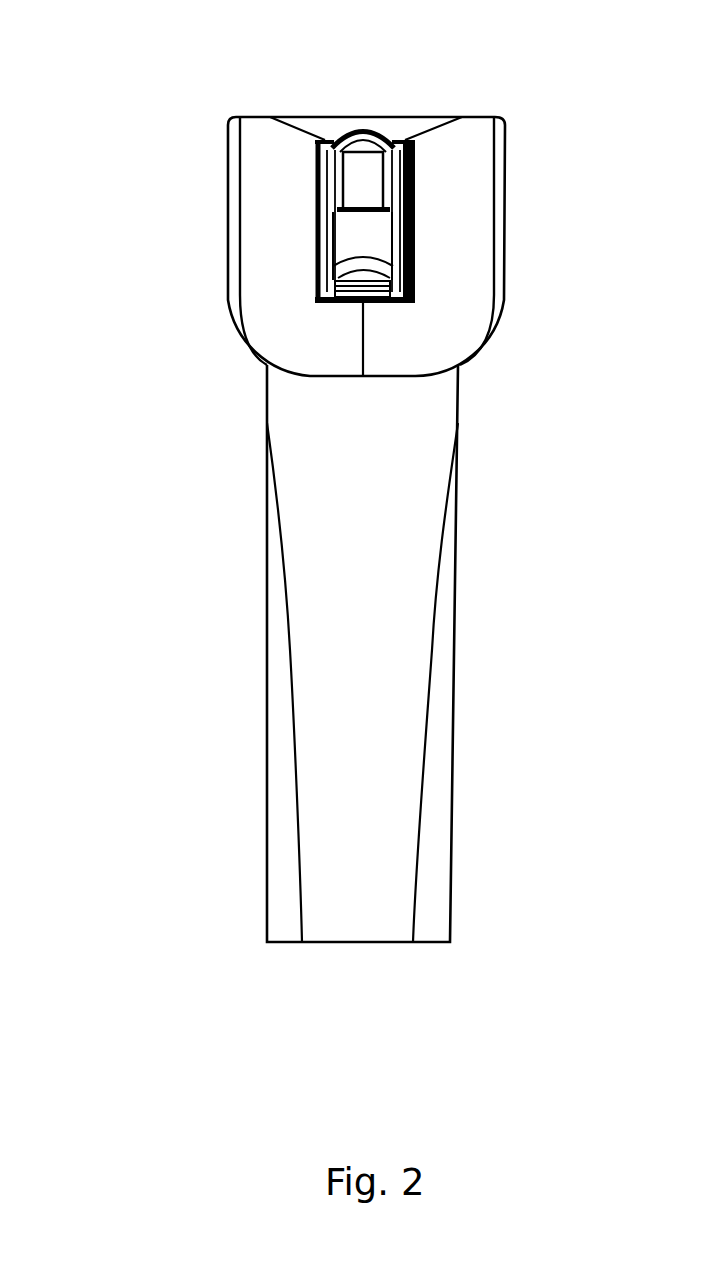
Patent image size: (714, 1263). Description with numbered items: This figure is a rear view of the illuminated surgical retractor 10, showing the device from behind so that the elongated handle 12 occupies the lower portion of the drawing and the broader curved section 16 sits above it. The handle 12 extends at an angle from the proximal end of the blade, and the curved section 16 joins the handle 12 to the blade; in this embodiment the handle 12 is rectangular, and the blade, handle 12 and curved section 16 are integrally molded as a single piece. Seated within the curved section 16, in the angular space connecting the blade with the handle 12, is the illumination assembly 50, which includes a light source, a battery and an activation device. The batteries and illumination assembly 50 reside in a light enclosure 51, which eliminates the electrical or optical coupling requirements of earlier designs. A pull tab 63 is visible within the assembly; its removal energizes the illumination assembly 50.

The illuminated surgical retractor 10 is at (50, 42).
The handle 12 is at (400, 718).
The curved section 16 is at (468, 173).
The illumination assembly 50 is at (450, 220).
The light enclosure 51 is at (377, 247).
The pull tab 63 is at (357, 197).